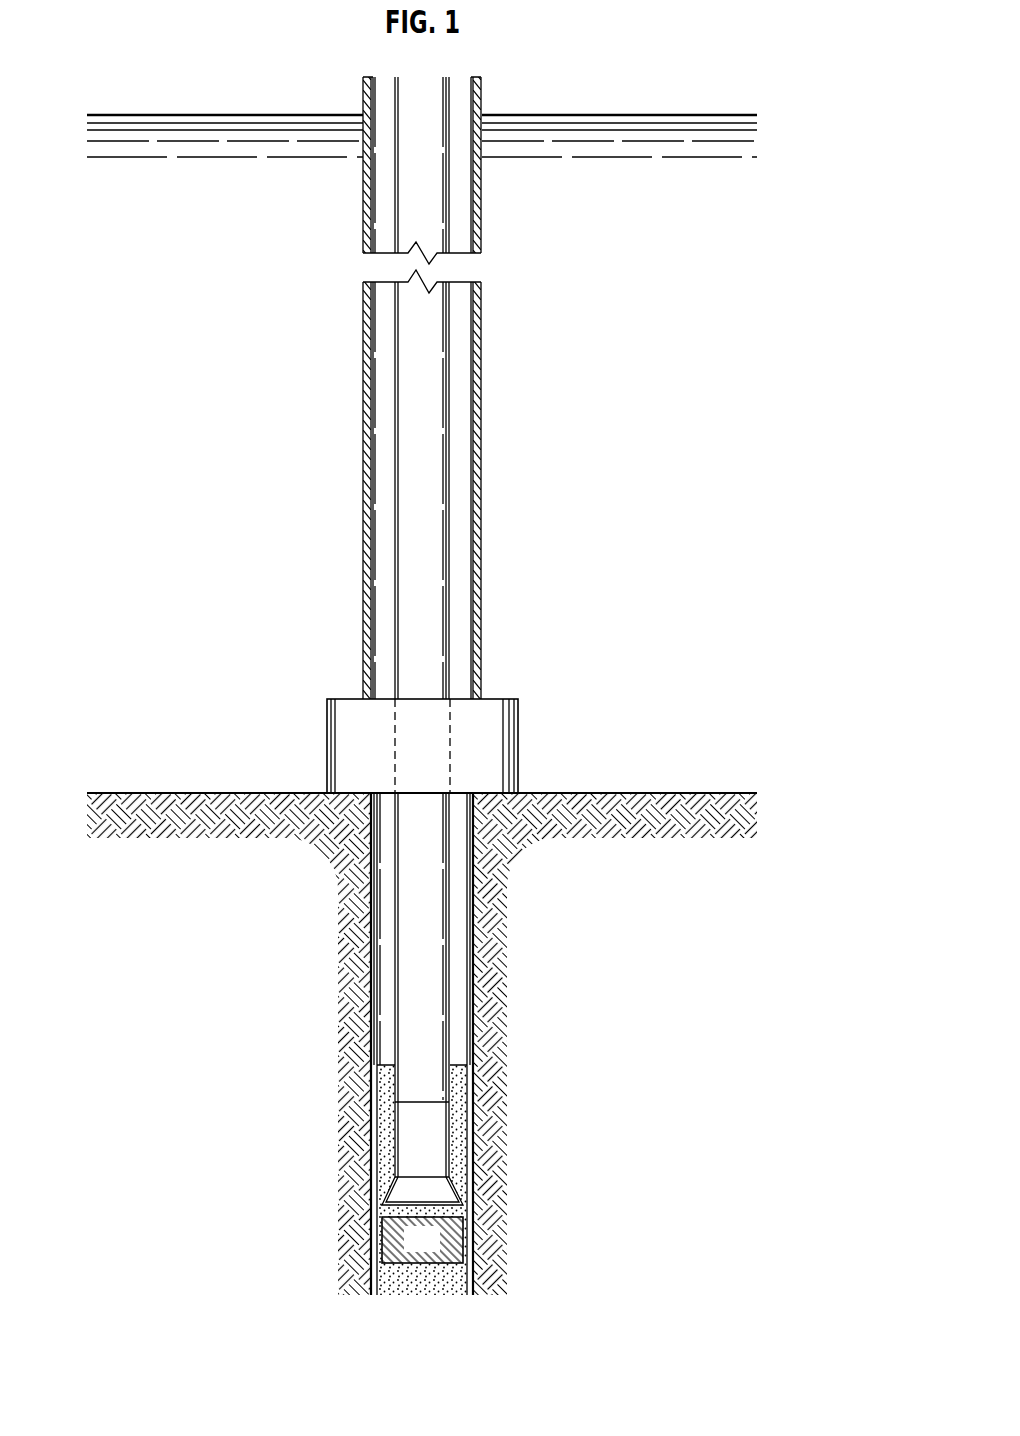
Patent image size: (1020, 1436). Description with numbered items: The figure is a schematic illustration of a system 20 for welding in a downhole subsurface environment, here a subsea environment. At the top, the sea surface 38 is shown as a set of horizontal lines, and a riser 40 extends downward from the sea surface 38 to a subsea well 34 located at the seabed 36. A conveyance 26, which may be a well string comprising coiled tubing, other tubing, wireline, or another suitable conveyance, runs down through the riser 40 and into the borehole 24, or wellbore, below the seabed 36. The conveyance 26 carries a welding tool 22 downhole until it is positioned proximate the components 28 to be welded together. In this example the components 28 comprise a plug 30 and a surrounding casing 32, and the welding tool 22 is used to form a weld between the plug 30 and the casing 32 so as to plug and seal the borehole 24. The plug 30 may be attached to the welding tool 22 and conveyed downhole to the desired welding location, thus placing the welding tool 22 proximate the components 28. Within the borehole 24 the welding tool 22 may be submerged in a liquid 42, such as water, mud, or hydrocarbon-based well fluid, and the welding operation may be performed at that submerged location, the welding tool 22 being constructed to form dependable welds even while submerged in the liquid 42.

The system 20 is at (384, 376).
The welding tool 22 is at (390, 1120).
The borehole 24 is at (387, 962).
The conveyance 26 is at (435, 465).
The components 28 is at (468, 1237).
The plug 30 is at (436, 1251).
The casing 32 is at (475, 1000).
The subsea well 34 is at (530, 710).
The seabed 36 is at (195, 793).
The sea surface 38 is at (652, 113).
The riser 40 is at (363, 378).
The liquid 42 is at (458, 1140).